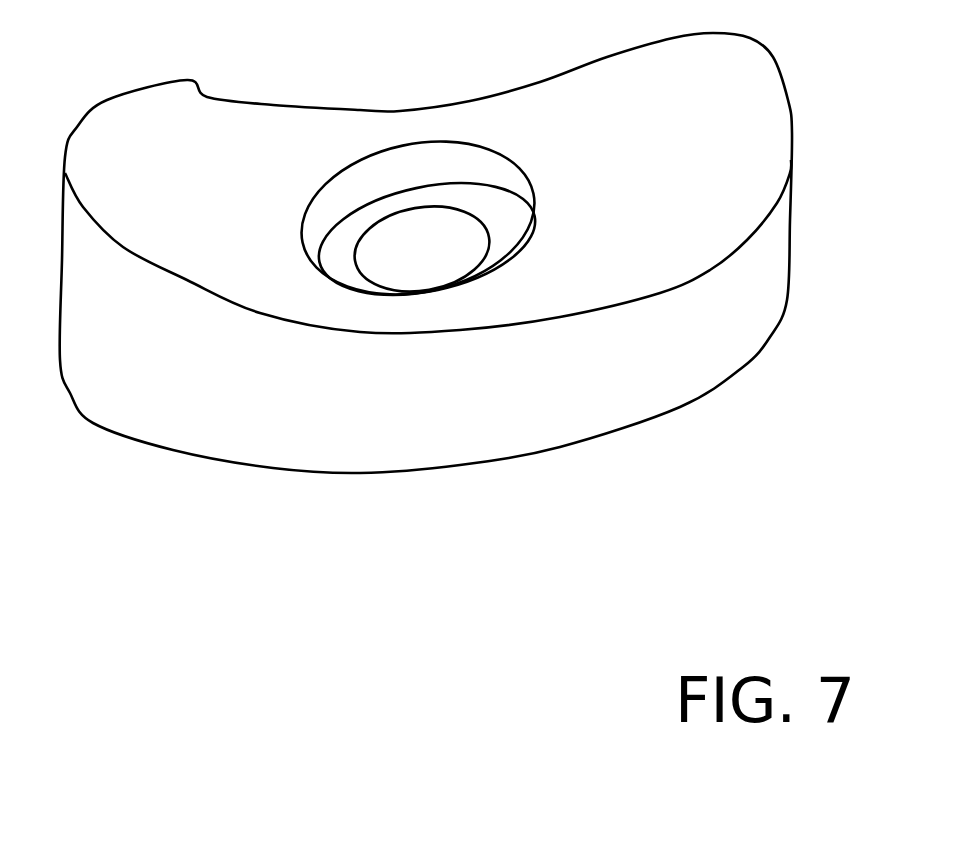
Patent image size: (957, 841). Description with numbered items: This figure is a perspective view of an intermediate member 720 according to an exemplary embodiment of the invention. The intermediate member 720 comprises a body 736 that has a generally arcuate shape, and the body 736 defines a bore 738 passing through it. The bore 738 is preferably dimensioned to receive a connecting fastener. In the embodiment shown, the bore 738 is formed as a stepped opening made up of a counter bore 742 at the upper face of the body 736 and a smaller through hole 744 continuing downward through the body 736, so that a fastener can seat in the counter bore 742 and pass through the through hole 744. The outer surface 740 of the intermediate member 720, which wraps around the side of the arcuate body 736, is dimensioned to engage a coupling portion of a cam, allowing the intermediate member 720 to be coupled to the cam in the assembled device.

The intermediate member 720 is at (772, 562).
The body 736 is at (723, 468).
The bore 738 is at (513, 143).
The outer surface 740 is at (678, 353).
The counter bore 742 is at (362, 158).
The through hole 744 is at (370, 233).